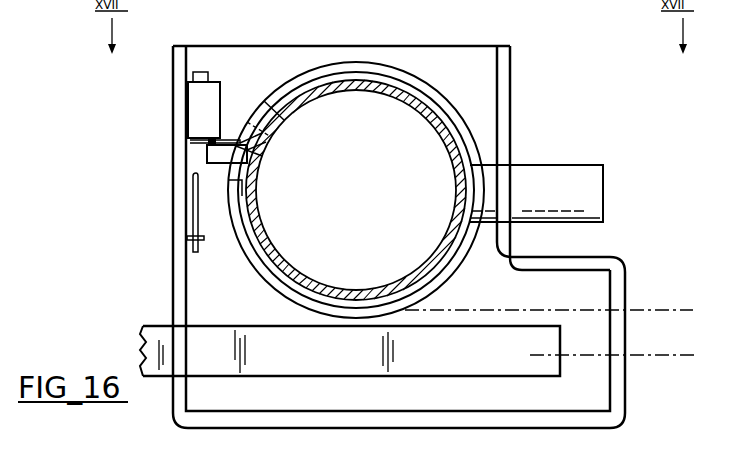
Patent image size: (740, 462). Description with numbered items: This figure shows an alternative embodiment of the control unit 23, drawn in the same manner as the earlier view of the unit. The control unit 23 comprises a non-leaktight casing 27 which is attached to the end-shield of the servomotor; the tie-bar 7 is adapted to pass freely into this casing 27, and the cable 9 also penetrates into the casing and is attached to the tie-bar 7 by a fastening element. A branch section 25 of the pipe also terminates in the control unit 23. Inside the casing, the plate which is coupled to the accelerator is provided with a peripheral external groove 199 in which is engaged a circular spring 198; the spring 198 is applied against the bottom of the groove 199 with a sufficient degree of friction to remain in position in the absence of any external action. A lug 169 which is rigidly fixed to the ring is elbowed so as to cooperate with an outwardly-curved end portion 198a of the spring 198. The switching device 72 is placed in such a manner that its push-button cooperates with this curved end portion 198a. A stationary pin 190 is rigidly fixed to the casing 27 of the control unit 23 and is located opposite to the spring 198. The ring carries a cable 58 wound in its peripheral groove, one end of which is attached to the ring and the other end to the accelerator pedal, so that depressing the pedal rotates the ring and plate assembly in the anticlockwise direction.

The tie-bar 7 is at (420, 360).
The cable 9 is at (659, 358).
The control unit 23 is at (160, 233).
The branch section 25 is at (555, 182).
The casing 27 is at (505, 100).
The cable 58 is at (658, 305).
The switching device 72 is at (198, 103).
The lug 169 is at (207, 160).
The stationary pin 190 is at (195, 203).
The circular spring 198 is at (425, 103).
The outwardly-curved end portion 198a is at (250, 118).
The peripheral external groove 199 is at (405, 83).